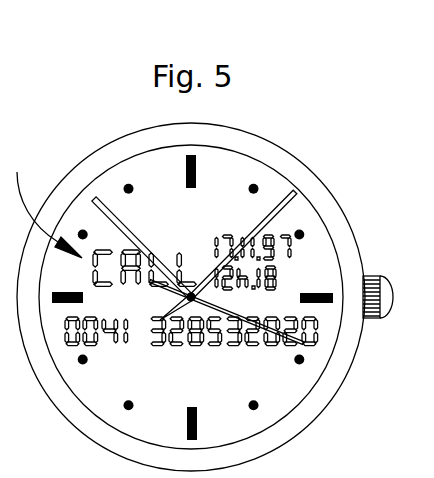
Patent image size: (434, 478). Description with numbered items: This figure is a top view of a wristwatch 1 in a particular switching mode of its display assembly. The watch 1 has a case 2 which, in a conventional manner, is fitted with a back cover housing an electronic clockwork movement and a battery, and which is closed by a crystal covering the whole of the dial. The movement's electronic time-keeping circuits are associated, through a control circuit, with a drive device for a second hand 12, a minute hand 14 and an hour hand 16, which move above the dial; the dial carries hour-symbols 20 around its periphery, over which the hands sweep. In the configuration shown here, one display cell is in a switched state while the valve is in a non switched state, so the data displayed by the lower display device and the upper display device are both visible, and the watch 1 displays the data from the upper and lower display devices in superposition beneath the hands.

The wristwatch 1 is at (347, 177).
The case 2 is at (318, 417).
The second hand 12 is at (291, 196).
The minute hand 14 is at (96, 200).
The hour hand 16 is at (303, 343).
The hour-symbols 20 is at (128, 183).